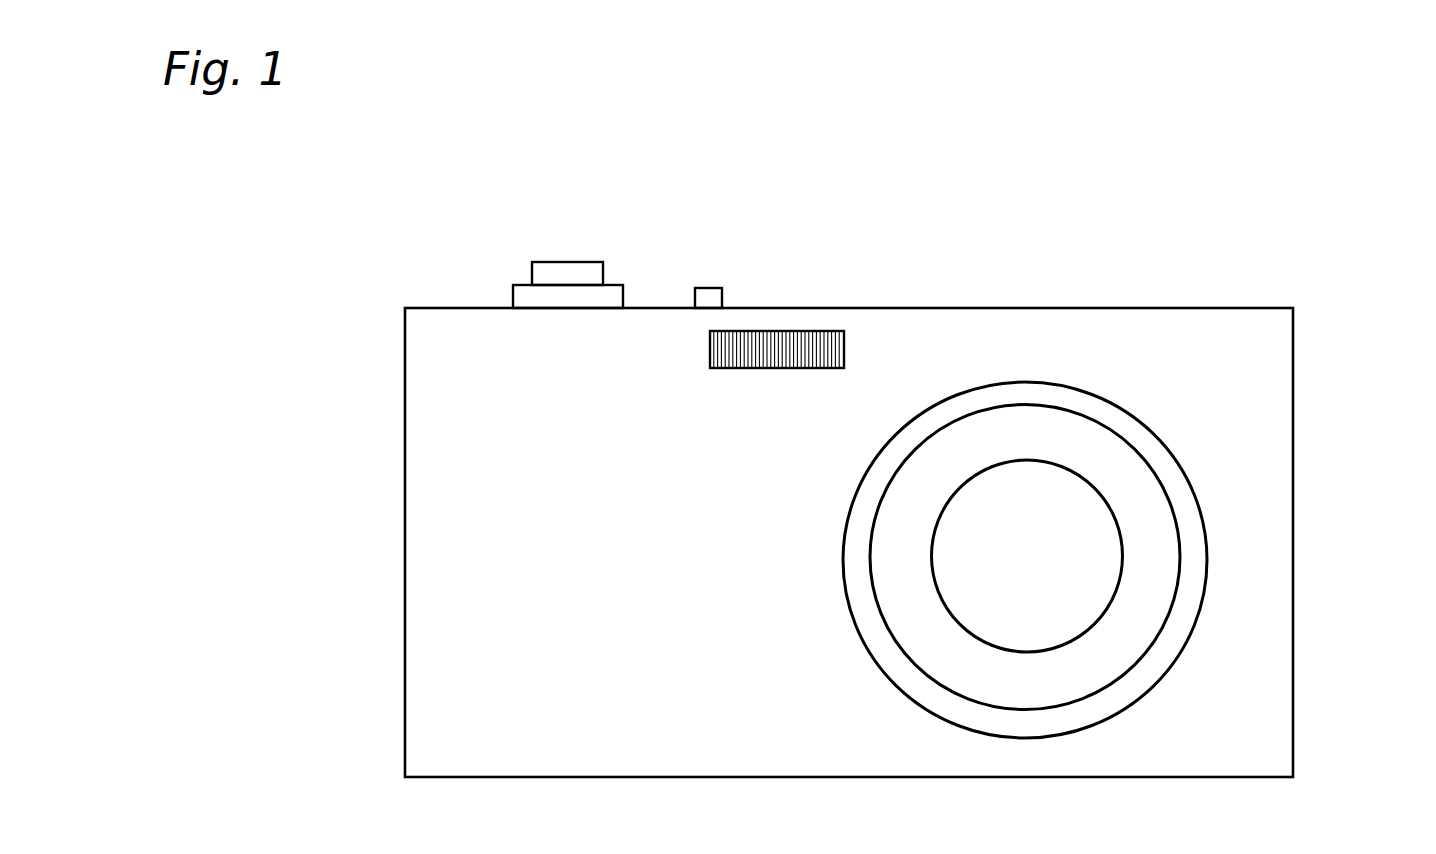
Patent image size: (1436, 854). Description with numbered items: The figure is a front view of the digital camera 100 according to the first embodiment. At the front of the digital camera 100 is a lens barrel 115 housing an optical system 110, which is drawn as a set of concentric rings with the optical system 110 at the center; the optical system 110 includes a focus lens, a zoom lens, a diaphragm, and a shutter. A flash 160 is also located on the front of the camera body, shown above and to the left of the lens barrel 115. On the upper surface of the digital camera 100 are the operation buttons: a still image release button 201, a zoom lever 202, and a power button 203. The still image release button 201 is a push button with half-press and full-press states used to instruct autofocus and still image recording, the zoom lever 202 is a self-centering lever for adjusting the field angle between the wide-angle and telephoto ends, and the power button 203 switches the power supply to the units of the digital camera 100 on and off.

The digital camera 100 is at (1178, 242).
The optical system 110 is at (1075, 578).
The lens barrel 115 is at (1140, 488).
The flash 160 is at (788, 353).
The still image release button 201 is at (557, 273).
The zoom lever 202 is at (610, 295).
The power button 203 is at (710, 297).